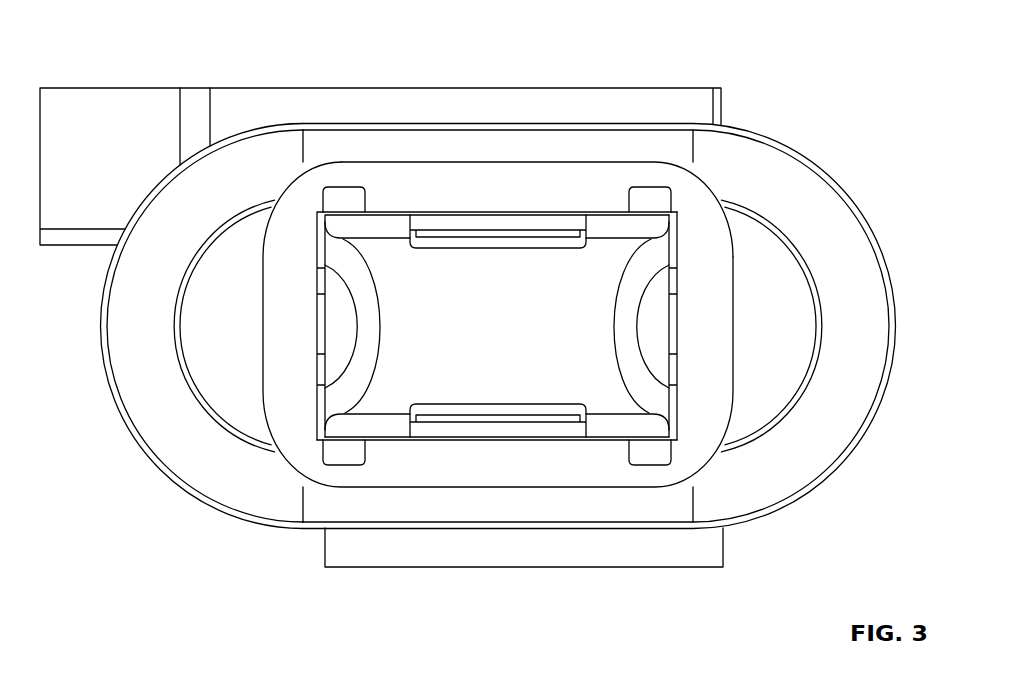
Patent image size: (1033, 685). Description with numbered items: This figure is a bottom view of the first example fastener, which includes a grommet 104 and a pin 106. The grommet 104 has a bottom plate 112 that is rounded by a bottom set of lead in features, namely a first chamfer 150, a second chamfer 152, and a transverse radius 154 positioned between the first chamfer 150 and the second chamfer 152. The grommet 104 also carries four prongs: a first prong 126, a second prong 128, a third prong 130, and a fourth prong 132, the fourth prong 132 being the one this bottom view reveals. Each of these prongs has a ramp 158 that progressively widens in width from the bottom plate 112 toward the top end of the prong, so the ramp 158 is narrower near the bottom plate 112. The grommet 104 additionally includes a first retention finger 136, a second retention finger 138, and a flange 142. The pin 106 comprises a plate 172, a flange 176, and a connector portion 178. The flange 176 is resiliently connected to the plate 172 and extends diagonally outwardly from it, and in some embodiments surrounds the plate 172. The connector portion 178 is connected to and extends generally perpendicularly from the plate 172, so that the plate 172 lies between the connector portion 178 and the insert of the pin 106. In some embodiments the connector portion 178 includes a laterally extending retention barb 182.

The retention barb 182 is at (101, 107).
The connector portion 178 is at (328, 102).
The flange 176 is at (120, 331).
The pin 106 is at (880, 247).
The plate 172 is at (777, 282).
The second prong 128 is at (708, 252).
The flange 142 is at (733, 333).
The grommet 104 is at (728, 250).
The first chamfer 150 is at (342, 327).
The second chamfer 152 is at (723, 307).
The transverse radius 154 is at (518, 269).
The bottom plate 112 is at (582, 268).
The first prong 126 is at (340, 200).
The first retention finger 136 is at (438, 223).
The third prong 130 is at (343, 450).
The ramp 158 is at (335, 457).
The fourth prong 132 is at (650, 450).
The second retention finger 138 is at (502, 410).